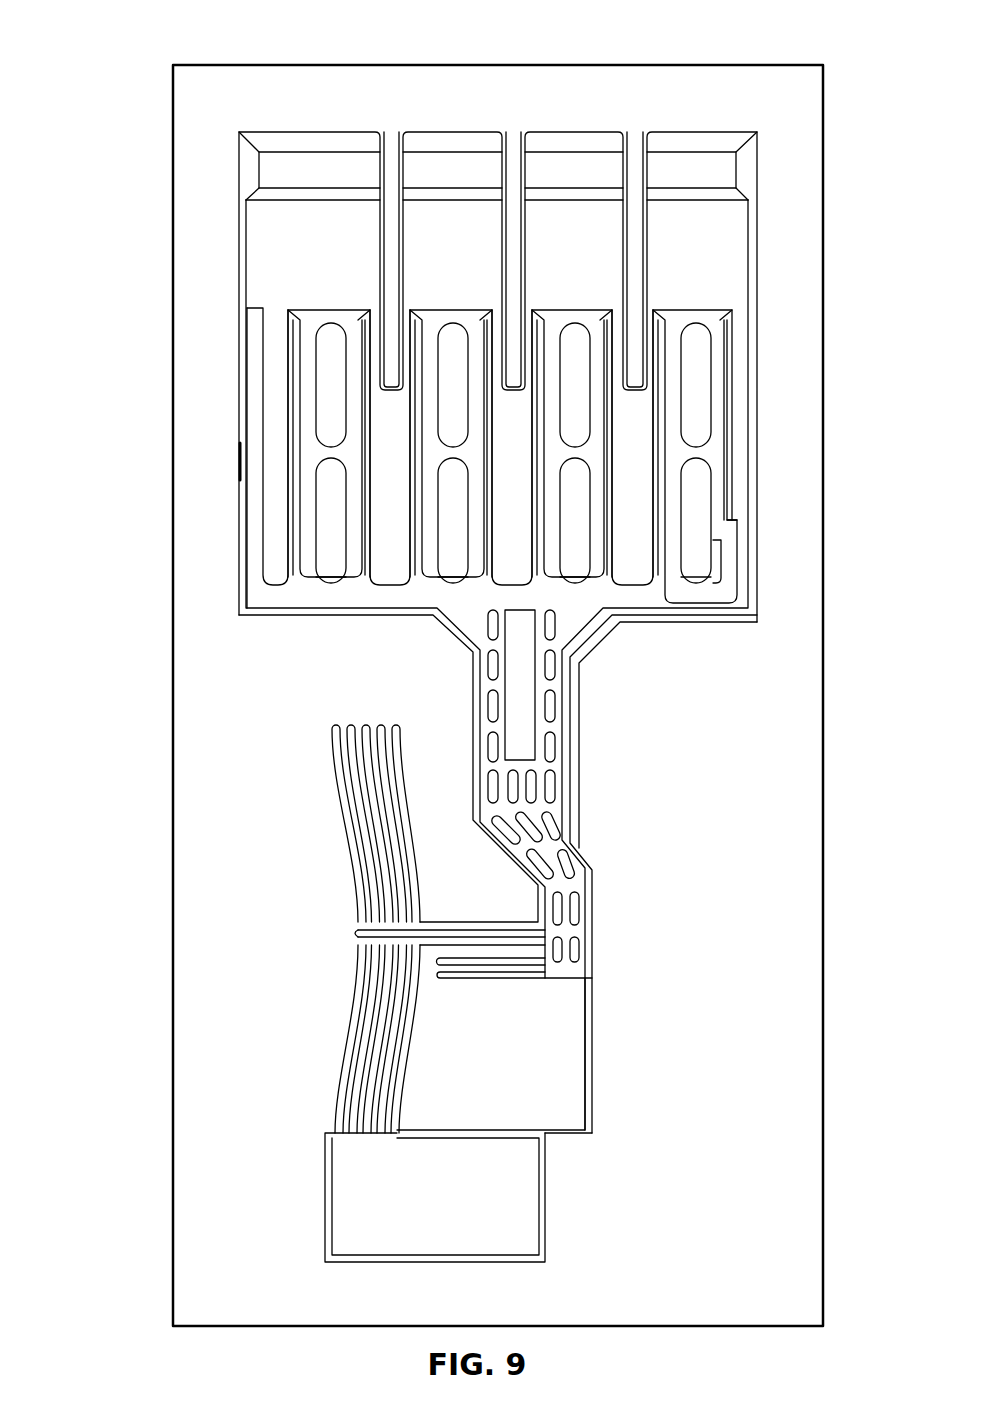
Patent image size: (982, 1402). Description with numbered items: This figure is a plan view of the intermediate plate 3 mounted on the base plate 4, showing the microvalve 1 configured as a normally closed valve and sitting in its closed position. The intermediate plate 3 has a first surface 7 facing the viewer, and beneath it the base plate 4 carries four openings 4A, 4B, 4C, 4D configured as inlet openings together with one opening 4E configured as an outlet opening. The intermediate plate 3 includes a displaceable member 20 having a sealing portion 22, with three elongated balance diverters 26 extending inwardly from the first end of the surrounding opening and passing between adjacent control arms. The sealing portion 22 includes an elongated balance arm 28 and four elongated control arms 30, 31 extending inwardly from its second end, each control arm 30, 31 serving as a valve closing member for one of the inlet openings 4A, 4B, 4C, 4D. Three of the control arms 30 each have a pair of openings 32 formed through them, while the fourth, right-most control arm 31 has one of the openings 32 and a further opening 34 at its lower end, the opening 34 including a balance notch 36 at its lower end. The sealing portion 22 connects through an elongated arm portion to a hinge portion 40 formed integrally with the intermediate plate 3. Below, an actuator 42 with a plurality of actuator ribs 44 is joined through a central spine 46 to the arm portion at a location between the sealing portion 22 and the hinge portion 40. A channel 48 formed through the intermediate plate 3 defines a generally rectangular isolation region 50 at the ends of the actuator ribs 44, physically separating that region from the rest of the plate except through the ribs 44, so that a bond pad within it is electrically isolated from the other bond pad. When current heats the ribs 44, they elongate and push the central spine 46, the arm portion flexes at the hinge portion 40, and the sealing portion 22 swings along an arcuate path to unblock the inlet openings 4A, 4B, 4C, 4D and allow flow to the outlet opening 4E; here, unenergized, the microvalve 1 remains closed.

The microvalve 1 is at (160, 47).
The intermediate plate 3 is at (722, 72).
The base plate 4 is at (252, 160).
The inlet opening 4A is at (660, 320).
The inlet opening 4B is at (539, 320).
The inlet opening 4C is at (417, 320).
The inlet opening 4D is at (295, 310).
The outlet opening 4E is at (312, 178).
The first surface 7 is at (642, 108).
The displaceable member 20 is at (552, 760).
The sealing portion 22 is at (720, 395).
The balance diverter 26 is at (389, 130).
The balance arm 28 is at (253, 362).
The control arm 30 is at (318, 338).
The fourth control arm 31 is at (684, 338).
The opening 32 is at (332, 345).
The opening 34 is at (700, 500).
The balance notch 36 is at (718, 560).
The hinge portion 40 is at (507, 968).
The actuator 42 is at (340, 929).
The actuator rib 44 is at (367, 820).
The central spine 46 is at (473, 923).
The channel 48 is at (322, 1195).
The isolation region 50 is at (525, 1225).